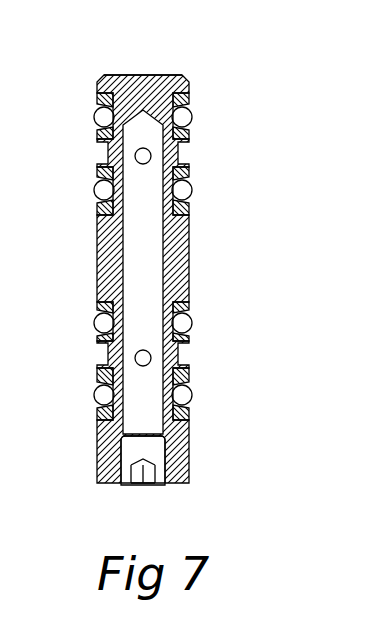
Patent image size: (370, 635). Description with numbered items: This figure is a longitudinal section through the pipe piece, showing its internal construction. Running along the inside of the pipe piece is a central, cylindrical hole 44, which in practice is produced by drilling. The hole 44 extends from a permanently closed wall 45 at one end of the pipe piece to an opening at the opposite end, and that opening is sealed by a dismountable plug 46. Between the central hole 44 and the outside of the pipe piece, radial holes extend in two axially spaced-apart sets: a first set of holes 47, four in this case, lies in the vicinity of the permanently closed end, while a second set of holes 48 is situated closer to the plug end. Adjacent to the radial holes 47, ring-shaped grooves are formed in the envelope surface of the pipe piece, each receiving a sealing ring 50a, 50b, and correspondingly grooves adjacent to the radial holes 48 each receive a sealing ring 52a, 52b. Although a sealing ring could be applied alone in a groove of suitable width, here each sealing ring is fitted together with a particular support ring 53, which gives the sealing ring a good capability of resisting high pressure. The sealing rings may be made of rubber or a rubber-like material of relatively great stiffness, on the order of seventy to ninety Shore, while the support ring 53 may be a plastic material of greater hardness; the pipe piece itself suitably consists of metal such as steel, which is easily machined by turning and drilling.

The central cylindrical hole 44 is at (148, 242).
The permanently closed wall 45 is at (143, 80).
The dismountable plug 46 is at (162, 481).
The radial holes 47 is at (115, 157).
The radial holes 48 is at (115, 358).
The sealing ring 50a is at (190, 120).
The sealing ring 50b is at (190, 192).
The sealing ring 52a is at (190, 397).
The sealing ring 52b is at (190, 323).
The support ring 53 is at (107, 103).